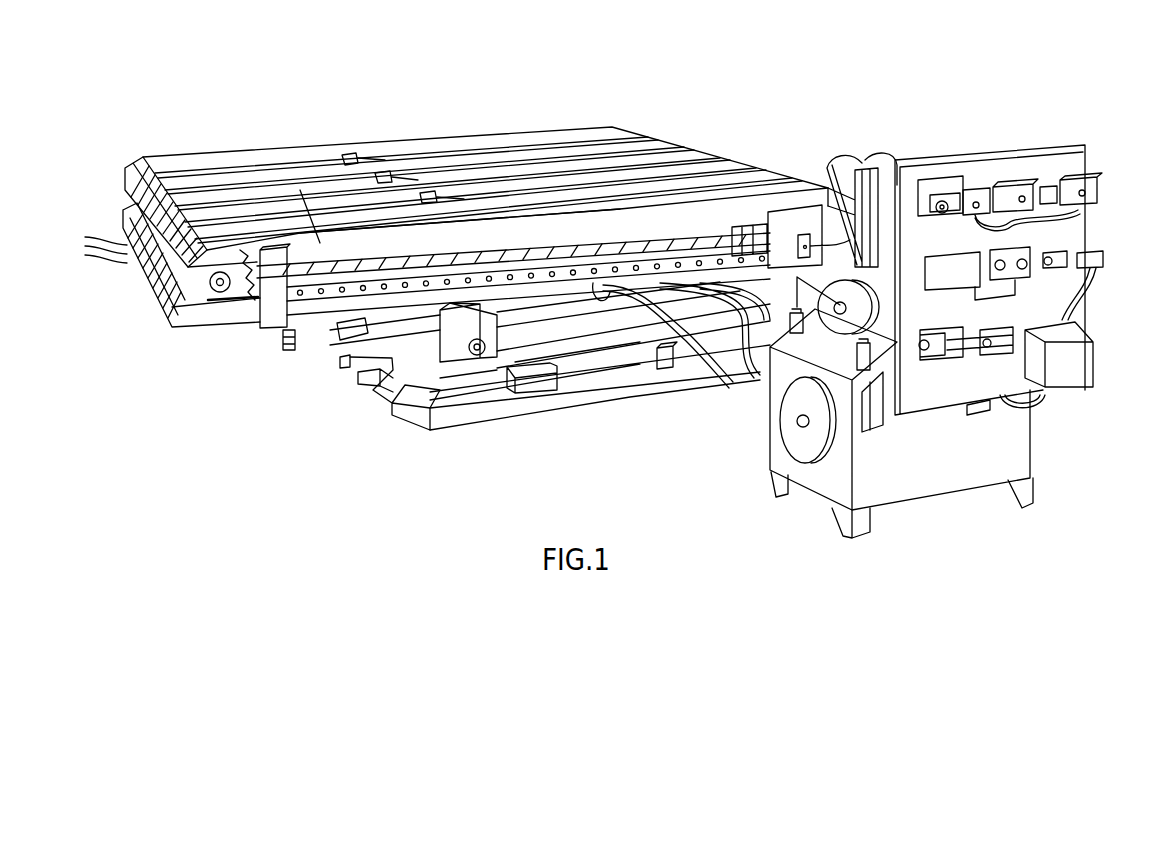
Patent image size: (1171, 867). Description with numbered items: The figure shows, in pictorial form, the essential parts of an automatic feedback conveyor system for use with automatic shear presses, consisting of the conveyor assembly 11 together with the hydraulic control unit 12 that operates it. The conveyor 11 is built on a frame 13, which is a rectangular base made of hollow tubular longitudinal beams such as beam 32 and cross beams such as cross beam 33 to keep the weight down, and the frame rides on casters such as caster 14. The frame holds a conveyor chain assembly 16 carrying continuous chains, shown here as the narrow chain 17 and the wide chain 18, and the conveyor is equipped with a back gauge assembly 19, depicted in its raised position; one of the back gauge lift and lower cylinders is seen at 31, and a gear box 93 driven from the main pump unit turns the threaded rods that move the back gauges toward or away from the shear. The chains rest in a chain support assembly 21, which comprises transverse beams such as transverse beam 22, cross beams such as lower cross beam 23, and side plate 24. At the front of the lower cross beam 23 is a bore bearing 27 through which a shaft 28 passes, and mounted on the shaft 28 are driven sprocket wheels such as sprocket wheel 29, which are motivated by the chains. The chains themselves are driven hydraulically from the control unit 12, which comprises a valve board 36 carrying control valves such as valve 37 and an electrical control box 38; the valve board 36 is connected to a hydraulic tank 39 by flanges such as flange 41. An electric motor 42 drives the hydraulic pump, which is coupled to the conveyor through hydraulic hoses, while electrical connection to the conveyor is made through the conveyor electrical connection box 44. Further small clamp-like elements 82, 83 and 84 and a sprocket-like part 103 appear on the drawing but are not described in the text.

The conveyor assembly 11 is at (652, 90).
The hydraulic control unit 12 is at (963, 131).
The frame 13 is at (418, 440).
The caster 14 is at (363, 380).
The conveyor chain assembly 16 is at (185, 338).
The narrow chain 17 is at (343, 227).
The wide chain 18 is at (177, 155).
The back gauge assembly 19 is at (326, 140).
The chain support assembly 21 is at (268, 336).
The transverse beam 22 is at (458, 330).
The lower cross beam 23 is at (347, 343).
The side plate 24 is at (320, 243).
The bore bearing 27 is at (223, 307).
The shaft 28 is at (212, 284).
The sprocket wheel 29 is at (90, 243).
The back gauge lift and lower cylinder 31 is at (287, 350).
The longitudinal beam 32 is at (616, 397).
The cross beam 33 is at (548, 382).
The valve board 36 is at (1058, 148).
The valve 37 is at (1100, 190).
The electrical control box 38 is at (1095, 361).
The hydraulic tank 39 is at (968, 466).
The flange 41 is at (875, 410).
The electric motor 42 is at (836, 314).
The conveyor electrical connection box 44 is at (800, 218).
The clamp 82 is at (350, 158).
The clamp 83 is at (385, 177).
The clamp 84 is at (428, 197).
The gear box 93 is at (745, 390).
The sprocket 103 is at (200, 279).